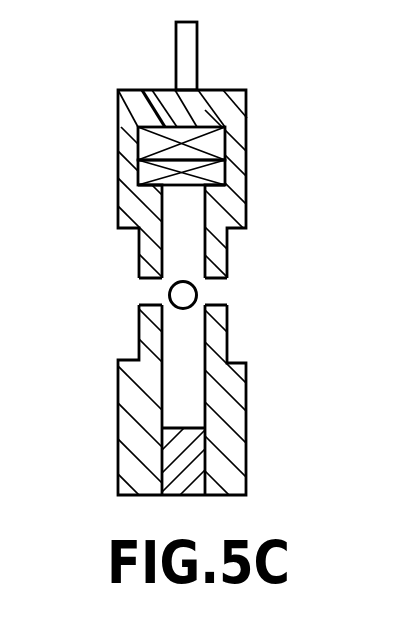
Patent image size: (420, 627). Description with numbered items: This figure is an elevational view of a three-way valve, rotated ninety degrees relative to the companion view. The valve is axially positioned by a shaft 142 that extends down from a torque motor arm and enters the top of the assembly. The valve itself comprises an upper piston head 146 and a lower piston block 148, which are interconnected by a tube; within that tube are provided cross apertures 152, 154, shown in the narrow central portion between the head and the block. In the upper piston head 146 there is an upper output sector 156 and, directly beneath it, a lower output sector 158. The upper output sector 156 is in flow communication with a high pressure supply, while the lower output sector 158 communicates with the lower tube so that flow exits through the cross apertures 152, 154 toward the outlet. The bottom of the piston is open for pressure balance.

The shaft 142 is at (197, 53).
The upper piston head 146 is at (246, 91).
The lower piston block 148 is at (246, 365).
The cross aperture 152 is at (180, 297).
The cross aperture 154 is at (150, 299).
The upper output sector 156 is at (215, 142).
The lower output sector 158 is at (215, 173).